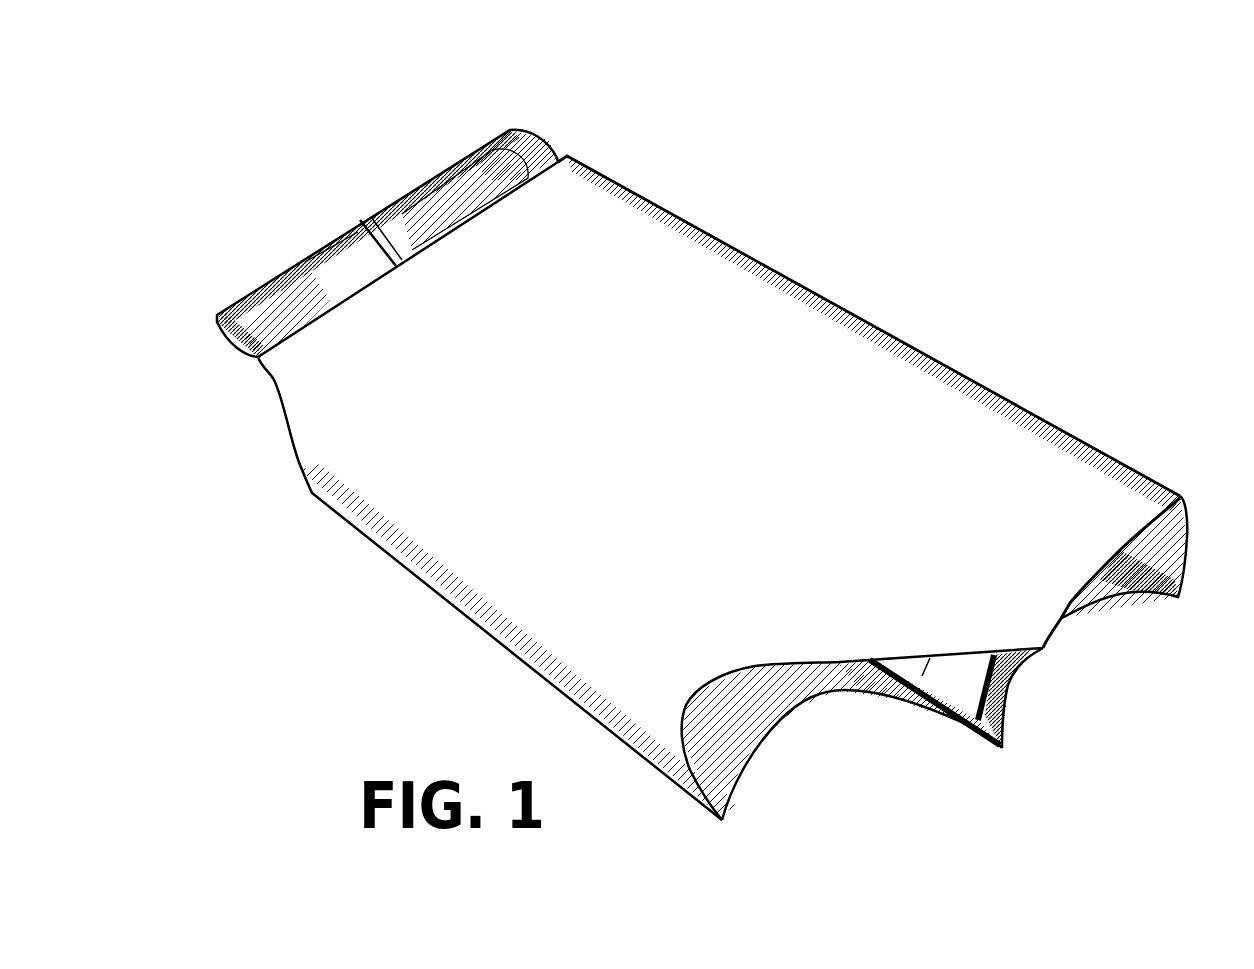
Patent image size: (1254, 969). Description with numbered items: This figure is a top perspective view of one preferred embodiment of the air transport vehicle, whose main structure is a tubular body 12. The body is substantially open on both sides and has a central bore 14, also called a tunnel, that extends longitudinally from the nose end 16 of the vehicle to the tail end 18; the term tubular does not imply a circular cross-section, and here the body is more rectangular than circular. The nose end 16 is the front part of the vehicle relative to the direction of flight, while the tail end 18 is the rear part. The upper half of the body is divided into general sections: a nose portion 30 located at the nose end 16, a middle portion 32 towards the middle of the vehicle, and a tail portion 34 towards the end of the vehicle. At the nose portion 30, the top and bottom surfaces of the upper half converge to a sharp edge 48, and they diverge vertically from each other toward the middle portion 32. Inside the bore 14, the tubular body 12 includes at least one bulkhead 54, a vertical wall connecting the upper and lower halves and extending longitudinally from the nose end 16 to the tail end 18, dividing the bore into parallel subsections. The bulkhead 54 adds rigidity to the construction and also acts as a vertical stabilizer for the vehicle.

The tubular body 12 is at (694, 440).
The central bore 14 is at (715, 708).
The nose end 16 is at (929, 740).
The tail end 18 is at (460, 128).
The nose portion 30 is at (1063, 592).
The middle portion 32 is at (785, 347).
The tail portion 34 is at (563, 190).
The sharp edge 48 is at (830, 663).
The bulkhead 54 is at (997, 682).